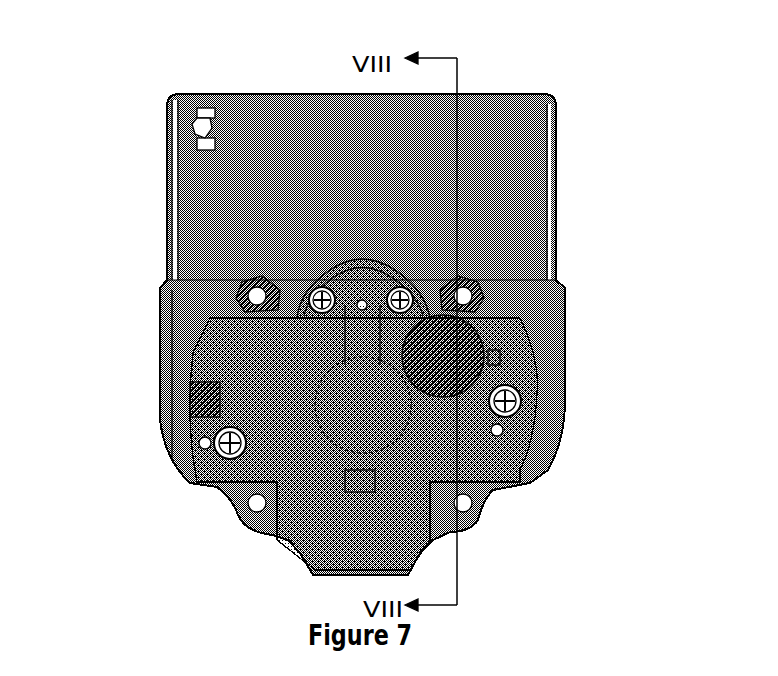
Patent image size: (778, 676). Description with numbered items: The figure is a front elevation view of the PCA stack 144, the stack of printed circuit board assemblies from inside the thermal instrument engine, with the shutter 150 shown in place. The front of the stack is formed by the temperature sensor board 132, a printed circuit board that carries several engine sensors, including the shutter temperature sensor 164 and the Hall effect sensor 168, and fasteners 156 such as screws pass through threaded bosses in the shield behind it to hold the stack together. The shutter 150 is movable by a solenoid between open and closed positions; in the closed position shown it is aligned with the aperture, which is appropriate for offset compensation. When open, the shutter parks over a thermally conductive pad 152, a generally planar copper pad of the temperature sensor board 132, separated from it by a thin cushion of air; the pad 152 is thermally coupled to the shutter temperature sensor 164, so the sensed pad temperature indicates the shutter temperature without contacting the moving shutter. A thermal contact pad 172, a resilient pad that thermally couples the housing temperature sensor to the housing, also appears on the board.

The temperature sensor board 132 is at (422, 512).
The PCA stack 144 is at (222, 222).
The shutter 150 is at (366, 406).
The thermally conductive pad 152 is at (445, 348).
The fasteners 156 is at (232, 447).
The shutter temperature sensor 164 is at (500, 357).
The Hall effect sensor 168 is at (362, 478).
The thermal contact pad 172 is at (205, 404).